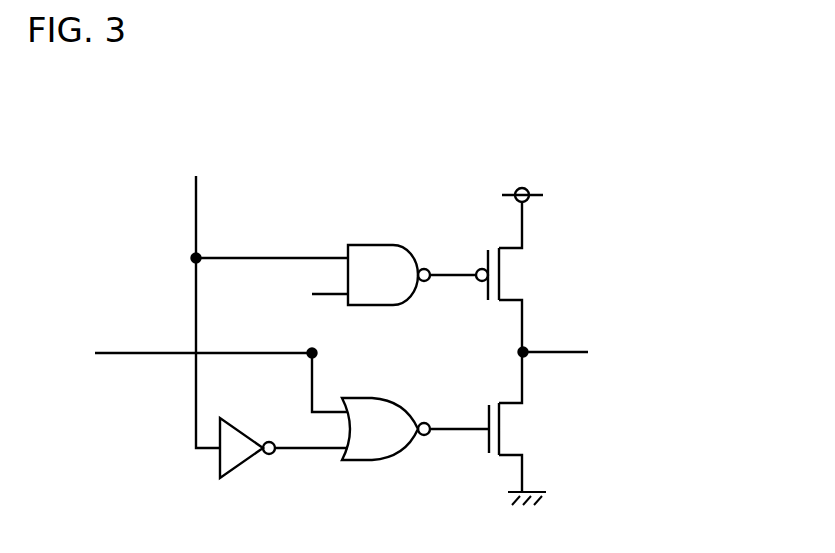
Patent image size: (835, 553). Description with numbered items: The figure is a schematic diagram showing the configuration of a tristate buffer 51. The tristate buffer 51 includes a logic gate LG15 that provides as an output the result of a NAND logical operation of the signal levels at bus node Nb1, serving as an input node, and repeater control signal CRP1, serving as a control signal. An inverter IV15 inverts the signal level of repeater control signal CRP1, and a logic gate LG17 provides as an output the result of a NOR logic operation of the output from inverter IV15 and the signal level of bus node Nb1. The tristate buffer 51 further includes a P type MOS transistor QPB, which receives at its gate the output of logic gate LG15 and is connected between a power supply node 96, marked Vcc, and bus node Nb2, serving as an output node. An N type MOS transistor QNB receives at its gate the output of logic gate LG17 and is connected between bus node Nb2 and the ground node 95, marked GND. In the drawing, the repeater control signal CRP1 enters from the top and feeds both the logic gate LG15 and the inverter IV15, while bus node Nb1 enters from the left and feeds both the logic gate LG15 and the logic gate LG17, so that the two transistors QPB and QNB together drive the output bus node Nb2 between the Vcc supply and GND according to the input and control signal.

The tristate buffer 51 is at (622, 117).
The ground node 95 is at (526, 473).
The power supply node 96 is at (523, 233).
The repeater control signal CRP1 is at (213, 279).
The bus node Nb1 is at (127, 353).
The bus node Nb2 is at (562, 353).
The logic gate LG15 is at (387, 250).
The logic gate LG17 is at (387, 448).
The inverter IV15 is at (240, 457).
The P type MOS transistor QPB is at (525, 274).
The N type MOS transistor QNB is at (527, 428).
The power supply voltage Vcc is at (522, 182).
The ground GND is at (530, 514).